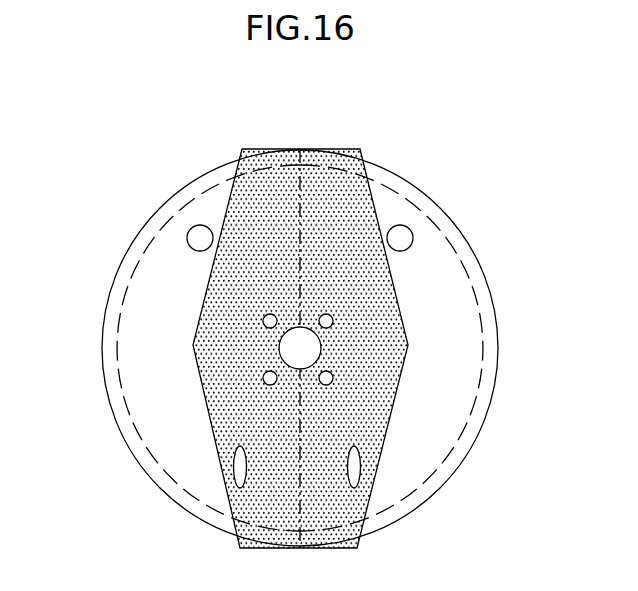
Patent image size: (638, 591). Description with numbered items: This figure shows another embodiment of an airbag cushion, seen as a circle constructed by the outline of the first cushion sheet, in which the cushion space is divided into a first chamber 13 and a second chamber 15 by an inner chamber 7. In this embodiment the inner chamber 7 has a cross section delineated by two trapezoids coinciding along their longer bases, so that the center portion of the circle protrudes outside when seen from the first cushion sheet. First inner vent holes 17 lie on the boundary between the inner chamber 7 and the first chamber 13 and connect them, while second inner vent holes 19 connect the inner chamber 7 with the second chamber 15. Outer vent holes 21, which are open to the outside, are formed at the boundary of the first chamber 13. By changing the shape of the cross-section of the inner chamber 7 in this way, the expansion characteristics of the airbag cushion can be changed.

The inner chamber 7 is at (274, 227).
The first chamber 13 is at (162, 360).
The second chamber 15 is at (446, 359).
The first inner vent holes 17 is at (236, 470).
The second inner vent holes 19 is at (359, 472).
The outer vent holes 21 is at (196, 236).